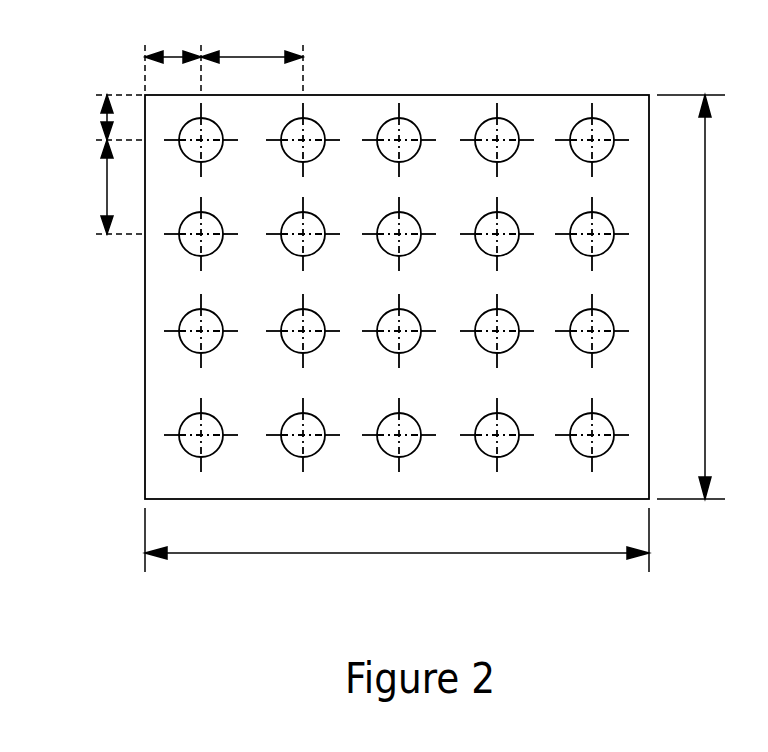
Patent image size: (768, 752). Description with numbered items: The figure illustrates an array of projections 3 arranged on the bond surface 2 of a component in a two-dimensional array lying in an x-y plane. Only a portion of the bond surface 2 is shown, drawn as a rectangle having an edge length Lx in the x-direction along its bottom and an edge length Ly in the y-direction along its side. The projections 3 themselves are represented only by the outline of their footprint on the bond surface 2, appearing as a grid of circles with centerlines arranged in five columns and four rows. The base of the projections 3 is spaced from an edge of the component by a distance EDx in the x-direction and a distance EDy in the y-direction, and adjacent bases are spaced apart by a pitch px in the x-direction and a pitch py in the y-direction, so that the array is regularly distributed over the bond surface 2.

The bond surface 2 is at (156, 363).
The projections 3 is at (408, 124).
The edge distance in the x-direction EDx is at (173, 59).
The edge distance in the y-direction EDy is at (101, 117).
The pitch in the x-direction px is at (252, 59).
The pitch in the y-direction py is at (112, 187).
The edge length in the x-direction Lx is at (397, 548).
The edge length in the y-direction Ly is at (699, 297).